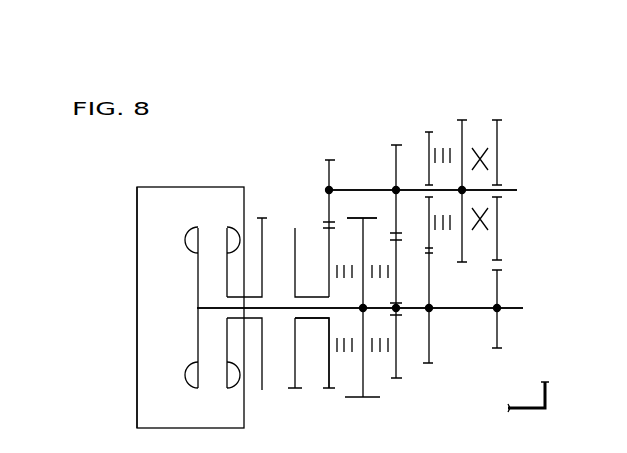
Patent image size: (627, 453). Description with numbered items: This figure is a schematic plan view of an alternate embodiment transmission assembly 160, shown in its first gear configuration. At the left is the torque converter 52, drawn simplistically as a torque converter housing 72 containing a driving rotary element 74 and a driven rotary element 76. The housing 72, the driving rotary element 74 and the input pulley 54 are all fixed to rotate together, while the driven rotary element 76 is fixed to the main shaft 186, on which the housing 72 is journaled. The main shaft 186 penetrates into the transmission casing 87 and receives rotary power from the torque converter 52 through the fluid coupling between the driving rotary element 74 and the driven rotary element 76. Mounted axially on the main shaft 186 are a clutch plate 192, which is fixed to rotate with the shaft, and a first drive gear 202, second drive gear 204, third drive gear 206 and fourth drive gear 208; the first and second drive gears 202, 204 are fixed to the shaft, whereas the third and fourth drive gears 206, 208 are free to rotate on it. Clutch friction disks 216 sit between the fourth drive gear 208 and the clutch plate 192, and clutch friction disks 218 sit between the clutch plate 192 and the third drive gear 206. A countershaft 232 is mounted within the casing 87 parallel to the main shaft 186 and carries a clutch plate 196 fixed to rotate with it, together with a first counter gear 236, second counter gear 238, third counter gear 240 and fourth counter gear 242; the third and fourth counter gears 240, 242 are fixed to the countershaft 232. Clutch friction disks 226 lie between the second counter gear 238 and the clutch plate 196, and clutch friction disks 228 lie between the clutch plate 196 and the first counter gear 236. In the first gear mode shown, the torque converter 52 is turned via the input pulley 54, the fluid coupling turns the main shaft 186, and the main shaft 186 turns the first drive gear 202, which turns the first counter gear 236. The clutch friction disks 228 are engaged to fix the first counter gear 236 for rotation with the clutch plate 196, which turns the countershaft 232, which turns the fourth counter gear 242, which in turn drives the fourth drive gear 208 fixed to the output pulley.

The transmission assembly 160 is at (521, 102).
The torque converter 52 is at (148, 182).
The input pulley 54 is at (258, 397).
The torque converter housing 72 is at (137, 212).
The driving rotary element 74 is at (233, 228).
The driven rotary element 76 is at (197, 253).
The main shaft 186 is at (512, 312).
The clutch plate 192 is at (352, 212).
The clutch plate 196 is at (462, 202).
The first drive gear 202 is at (495, 288).
The second drive gear 204 is at (430, 342).
The third drive gear 206 is at (399, 262).
The fourth drive gear 208 is at (328, 377).
The clutch friction disks 216 is at (340, 262).
The clutch friction disks 218 is at (378, 258).
The clutch friction disks 226 is at (443, 233).
The clutch friction disks 228 is at (480, 228).
The countershaft 232 is at (510, 188).
The first counter gear 236 is at (497, 130).
The second counter gear 238 is at (430, 130).
The third counter gear 240 is at (396, 145).
The fourth counter gear 242 is at (329, 160).
The transmission casing 87 is at (547, 397).